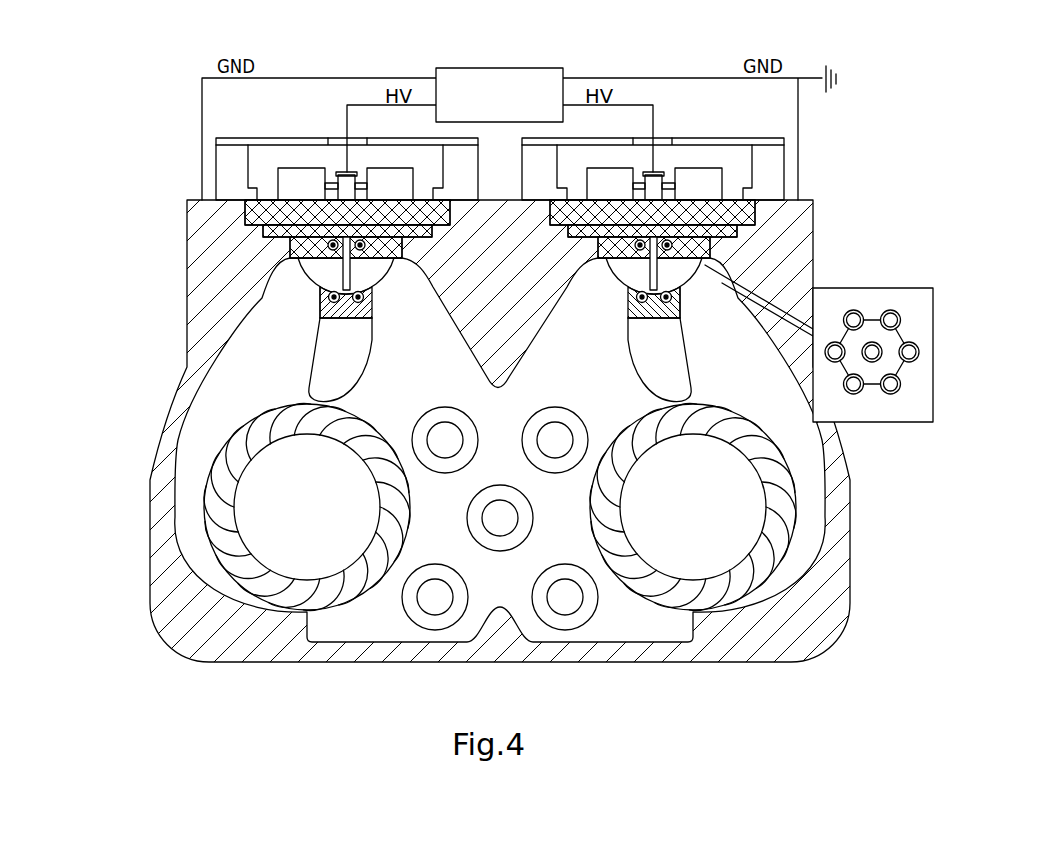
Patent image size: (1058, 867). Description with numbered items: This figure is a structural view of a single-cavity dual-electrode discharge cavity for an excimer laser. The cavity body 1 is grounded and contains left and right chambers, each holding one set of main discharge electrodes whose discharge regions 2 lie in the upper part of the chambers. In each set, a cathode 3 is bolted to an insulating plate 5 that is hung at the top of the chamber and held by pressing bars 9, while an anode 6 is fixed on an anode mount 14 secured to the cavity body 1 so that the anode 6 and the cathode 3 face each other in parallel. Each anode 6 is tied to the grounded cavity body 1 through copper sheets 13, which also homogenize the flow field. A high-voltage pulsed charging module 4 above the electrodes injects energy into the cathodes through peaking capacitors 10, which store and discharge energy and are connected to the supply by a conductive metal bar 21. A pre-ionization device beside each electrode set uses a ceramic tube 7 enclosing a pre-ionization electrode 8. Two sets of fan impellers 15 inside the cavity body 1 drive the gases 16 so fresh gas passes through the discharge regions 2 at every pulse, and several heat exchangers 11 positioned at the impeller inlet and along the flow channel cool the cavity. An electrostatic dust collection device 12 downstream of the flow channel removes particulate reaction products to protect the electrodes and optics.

The cavity body 1 is at (188, 366).
The discharge region 2 is at (337, 268).
The cathode 3 is at (288, 256).
The high-voltage pulsed charging module 4 is at (490, 70).
The insulating plate 5 is at (252, 237).
The anode 6 is at (322, 312).
The ceramic tube 7 is at (377, 308).
The pre-ionization electrode 8 is at (375, 318).
The pressing bar 9 is at (230, 170).
The peaking capacitor 10 is at (693, 172).
The heat exchanger 11 is at (423, 613).
The electrostatic dust collection device 12 is at (860, 293).
The copper sheet 13 is at (372, 285).
The anode mount 14 is at (343, 372).
The fan impeller 15 is at (220, 542).
The gases 16 is at (440, 383).
The conductive metal bar 21 is at (330, 180).